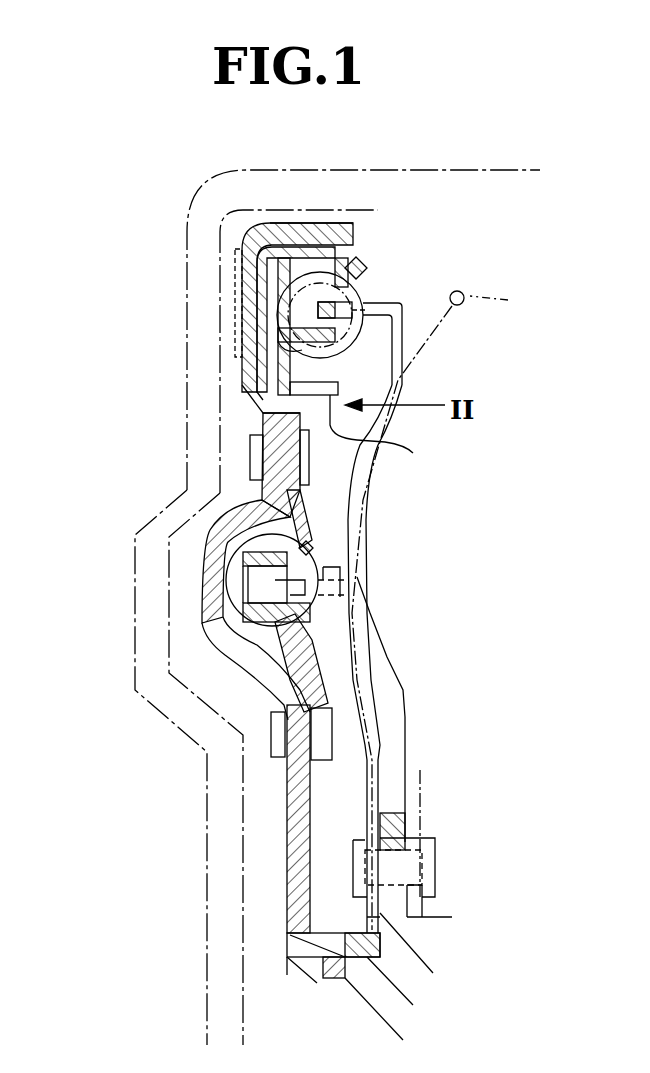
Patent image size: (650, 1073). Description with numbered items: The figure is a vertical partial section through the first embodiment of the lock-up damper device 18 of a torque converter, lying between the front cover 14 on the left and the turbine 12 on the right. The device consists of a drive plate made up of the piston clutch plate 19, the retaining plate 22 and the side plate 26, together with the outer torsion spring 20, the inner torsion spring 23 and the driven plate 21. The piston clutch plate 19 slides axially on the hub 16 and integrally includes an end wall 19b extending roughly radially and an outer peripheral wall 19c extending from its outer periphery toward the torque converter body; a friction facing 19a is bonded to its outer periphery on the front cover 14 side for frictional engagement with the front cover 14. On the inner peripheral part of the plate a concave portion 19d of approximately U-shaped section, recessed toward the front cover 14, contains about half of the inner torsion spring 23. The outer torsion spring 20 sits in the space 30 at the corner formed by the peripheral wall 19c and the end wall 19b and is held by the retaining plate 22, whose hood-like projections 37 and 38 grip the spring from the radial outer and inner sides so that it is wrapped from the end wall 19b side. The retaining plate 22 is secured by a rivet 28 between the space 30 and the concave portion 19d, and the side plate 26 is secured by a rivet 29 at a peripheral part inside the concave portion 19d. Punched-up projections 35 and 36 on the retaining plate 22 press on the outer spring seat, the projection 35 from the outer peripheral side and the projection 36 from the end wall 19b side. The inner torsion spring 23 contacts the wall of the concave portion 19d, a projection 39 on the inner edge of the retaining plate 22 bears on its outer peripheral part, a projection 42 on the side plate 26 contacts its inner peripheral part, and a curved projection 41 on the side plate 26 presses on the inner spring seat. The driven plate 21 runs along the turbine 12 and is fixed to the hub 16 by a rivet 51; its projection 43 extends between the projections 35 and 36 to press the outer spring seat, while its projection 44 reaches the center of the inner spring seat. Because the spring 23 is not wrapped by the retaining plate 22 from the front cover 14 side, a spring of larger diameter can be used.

The turbine 12 is at (443, 609).
The front cover 14 is at (145, 609).
The hub 16 is at (435, 932).
The lock-up damper device 18 is at (302, 253).
The piston clutch plate 19 is at (244, 377).
The friction facing 19a is at (244, 270).
The end wall 19b is at (290, 800).
The outer peripheral wall 19c is at (380, 224).
The concave portion 19d is at (258, 511).
The outer torsion spring 20 is at (368, 282).
The driven plate 21 is at (320, 712).
The retaining plate 22 is at (265, 415).
The inner torsion spring 23 is at (350, 578).
The side plate 26 is at (340, 663).
The rivet 28 is at (250, 455).
The rivet 29 is at (340, 747).
The space 30 is at (300, 303).
The projection 35 is at (380, 247).
The projection 36 is at (360, 348).
The hood-like projection 37 is at (385, 262).
The hood-like projection 38 is at (360, 437).
The projection 39 is at (313, 545).
The projection 41 is at (243, 590).
The projection 42 is at (340, 628).
The projection 43 is at (360, 337).
The projection 44 is at (330, 612).
The rivet 51 is at (403, 863).